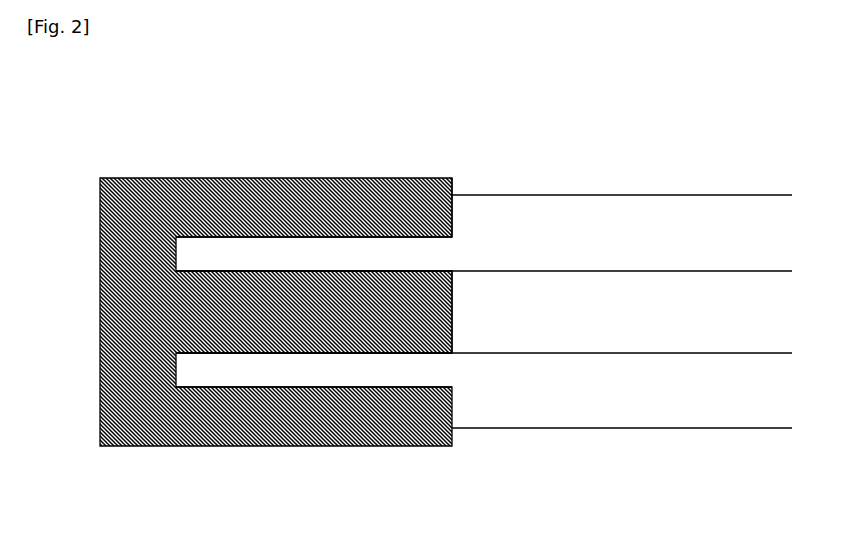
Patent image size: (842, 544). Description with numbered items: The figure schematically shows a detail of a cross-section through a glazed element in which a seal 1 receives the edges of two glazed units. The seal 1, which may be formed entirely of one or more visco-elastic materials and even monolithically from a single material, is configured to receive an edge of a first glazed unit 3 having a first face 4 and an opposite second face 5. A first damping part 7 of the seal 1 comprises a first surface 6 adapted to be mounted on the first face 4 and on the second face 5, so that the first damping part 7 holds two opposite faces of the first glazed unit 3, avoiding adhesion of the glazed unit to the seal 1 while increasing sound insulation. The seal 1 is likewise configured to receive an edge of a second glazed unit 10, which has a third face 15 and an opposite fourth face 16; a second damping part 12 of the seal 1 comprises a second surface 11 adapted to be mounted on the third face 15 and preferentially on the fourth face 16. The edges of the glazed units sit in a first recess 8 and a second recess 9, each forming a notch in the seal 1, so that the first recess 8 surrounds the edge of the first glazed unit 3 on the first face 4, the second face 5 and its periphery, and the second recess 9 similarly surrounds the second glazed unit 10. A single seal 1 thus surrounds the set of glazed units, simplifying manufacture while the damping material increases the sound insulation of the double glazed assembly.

The seal 1 is at (250, 183).
The first glazed unit 3 is at (728, 217).
The first face 4 is at (430, 233).
The second face 5 is at (442, 273).
The first surface 6 is at (393, 233).
The first damping part 7 is at (203, 223).
The first recess 8 is at (335, 252).
The second recess 9 is at (240, 372).
The second glazed unit 10 is at (730, 367).
The second surface 11 is at (297, 387).
The second damping part 12 is at (182, 400).
The third face 15 is at (432, 350).
The fourth face 16 is at (406, 386).